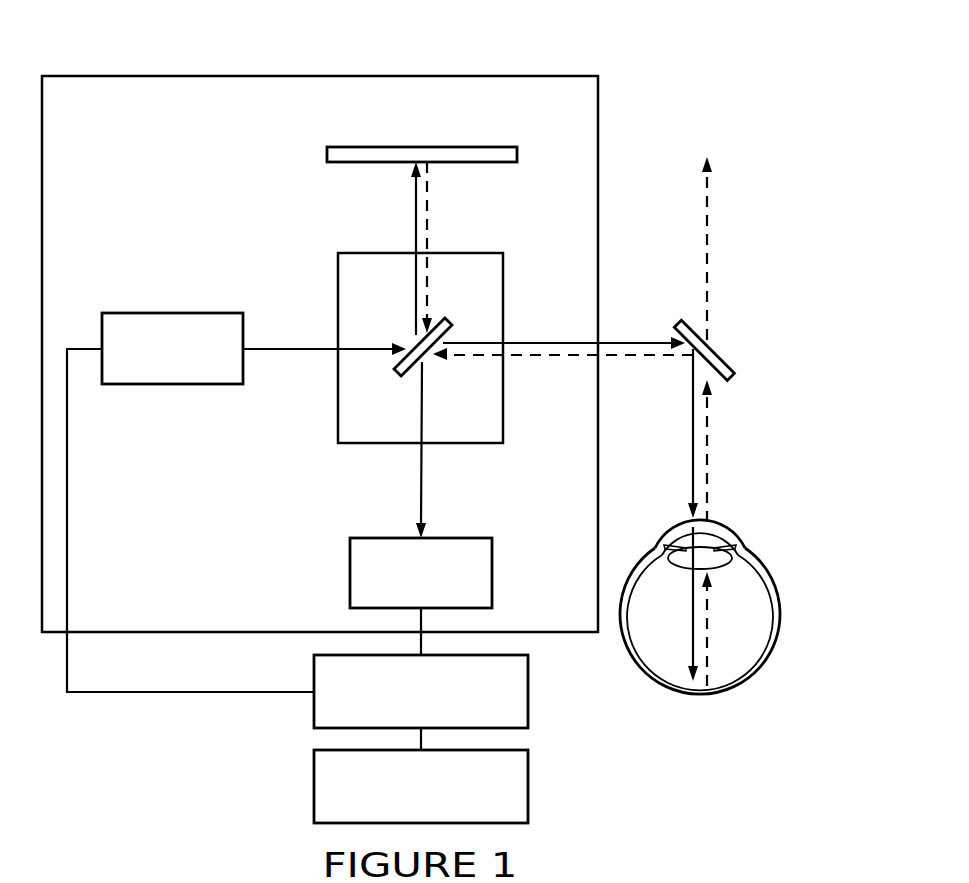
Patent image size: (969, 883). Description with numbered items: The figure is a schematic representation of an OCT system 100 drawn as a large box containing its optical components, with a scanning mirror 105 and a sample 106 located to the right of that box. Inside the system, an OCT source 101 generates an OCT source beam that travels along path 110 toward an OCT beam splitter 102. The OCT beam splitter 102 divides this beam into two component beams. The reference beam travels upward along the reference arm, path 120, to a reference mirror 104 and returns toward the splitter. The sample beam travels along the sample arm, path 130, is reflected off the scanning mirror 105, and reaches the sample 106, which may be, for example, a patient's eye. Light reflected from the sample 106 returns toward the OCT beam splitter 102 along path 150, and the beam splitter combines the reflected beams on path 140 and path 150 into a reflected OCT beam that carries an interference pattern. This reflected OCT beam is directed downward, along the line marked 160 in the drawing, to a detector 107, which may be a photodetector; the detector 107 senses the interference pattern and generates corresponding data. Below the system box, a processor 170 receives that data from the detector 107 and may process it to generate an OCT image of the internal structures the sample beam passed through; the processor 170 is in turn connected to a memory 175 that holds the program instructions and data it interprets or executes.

The OCT system 100 is at (237, 70).
The OCT source 101 is at (172, 312).
The OCT beam splitter 102 is at (442, 318).
The reference mirror 104 is at (456, 146).
The scanning mirror 105 is at (727, 360).
The sample 106 is at (780, 616).
The detector 107 is at (349, 573).
The path 110 is at (290, 347).
The path 120 is at (414, 207).
The path 130 is at (551, 342).
The path 140 is at (429, 199).
The path 150 is at (709, 449).
The combined beam to detector 160 is at (419, 490).
The processor 170 is at (313, 703).
The memory 175 is at (313, 787).